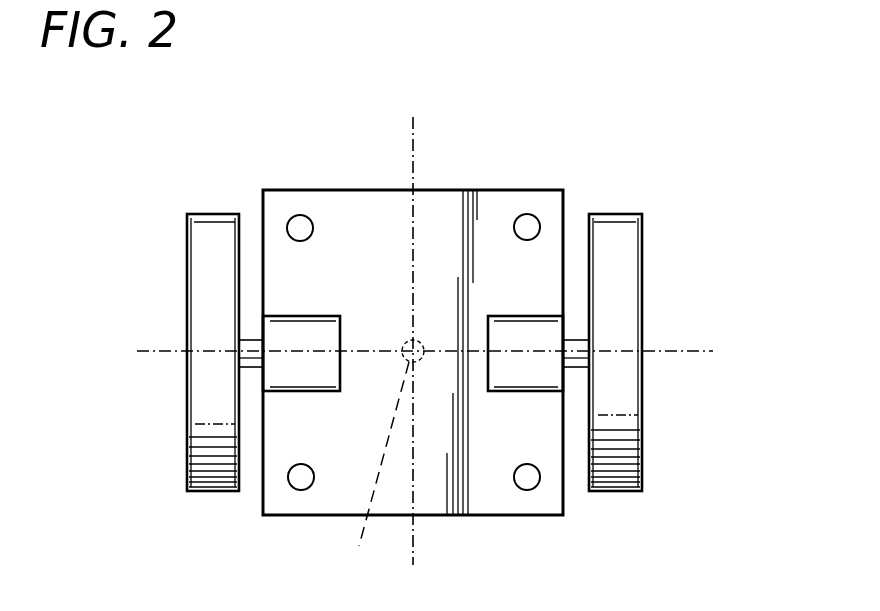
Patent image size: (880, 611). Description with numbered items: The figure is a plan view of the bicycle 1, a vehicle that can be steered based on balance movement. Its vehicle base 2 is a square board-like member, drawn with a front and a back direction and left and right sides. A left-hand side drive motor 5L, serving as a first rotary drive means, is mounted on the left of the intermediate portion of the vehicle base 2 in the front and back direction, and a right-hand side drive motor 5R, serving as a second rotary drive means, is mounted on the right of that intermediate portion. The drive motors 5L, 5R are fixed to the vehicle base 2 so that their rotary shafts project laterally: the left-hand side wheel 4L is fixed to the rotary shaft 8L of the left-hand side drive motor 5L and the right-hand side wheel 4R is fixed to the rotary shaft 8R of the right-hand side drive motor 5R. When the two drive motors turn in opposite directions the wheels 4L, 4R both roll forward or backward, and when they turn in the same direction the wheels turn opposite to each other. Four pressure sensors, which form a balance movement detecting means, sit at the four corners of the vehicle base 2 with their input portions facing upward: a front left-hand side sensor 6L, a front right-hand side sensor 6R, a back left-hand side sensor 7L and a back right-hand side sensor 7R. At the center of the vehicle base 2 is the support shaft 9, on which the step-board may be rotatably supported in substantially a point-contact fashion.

The bicycle 1 is at (389, 178).
The vehicle base 2 is at (341, 190).
The left-hand side wheel 4L is at (187, 268).
The right-hand side wheel 4R is at (642, 270).
The left-hand side drive motor 5L is at (263, 381).
The right-hand side drive motor 5R is at (563, 381).
The front left-hand side sensor 6L is at (299, 215).
The front right-hand side sensor 6R is at (528, 214).
The back left-hand side sensor 7L is at (301, 490).
The back right-hand side sensor 7R is at (527, 490).
The rotary shaft of the left-hand side drive motor 8L is at (239, 357).
The rotary shaft of the right-hand side drive motor 8R is at (589, 356).
The support shaft 9 is at (382, 472).